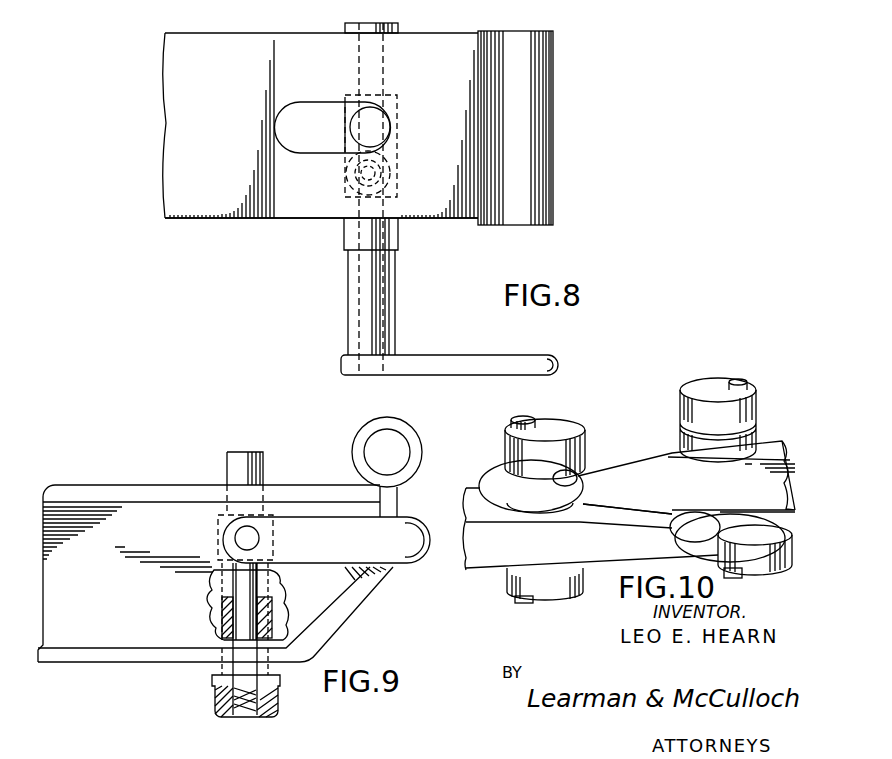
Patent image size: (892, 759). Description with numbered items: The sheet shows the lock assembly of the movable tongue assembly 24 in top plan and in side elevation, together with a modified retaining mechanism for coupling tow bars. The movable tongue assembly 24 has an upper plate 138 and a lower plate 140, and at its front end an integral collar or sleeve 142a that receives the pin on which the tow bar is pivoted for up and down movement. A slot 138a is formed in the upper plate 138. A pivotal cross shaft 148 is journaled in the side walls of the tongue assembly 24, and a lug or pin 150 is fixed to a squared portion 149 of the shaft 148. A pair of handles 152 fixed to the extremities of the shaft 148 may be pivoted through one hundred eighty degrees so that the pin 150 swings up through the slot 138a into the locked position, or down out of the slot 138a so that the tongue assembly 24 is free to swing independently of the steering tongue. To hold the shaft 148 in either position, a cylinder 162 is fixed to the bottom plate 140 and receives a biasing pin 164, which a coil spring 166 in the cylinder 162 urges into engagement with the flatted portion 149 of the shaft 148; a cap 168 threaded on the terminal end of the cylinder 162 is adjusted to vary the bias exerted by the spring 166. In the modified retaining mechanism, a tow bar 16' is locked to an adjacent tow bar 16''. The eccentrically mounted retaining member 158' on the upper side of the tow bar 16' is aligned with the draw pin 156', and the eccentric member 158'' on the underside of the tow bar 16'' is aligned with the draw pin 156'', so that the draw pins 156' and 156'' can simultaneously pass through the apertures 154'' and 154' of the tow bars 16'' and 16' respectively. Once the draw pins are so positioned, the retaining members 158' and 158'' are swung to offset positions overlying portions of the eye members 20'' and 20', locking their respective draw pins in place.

In FIG. 8, the upper plate member 138 is at (231, 101).
In FIG. 8, the slot 138a is at (307, 107).
In FIG. 8, the squared portion 149 is at (397, 97).
In FIG. 9, the squared portion 149 is at (218, 531).
In FIG. 8, the lug or pin 150 is at (388, 127).
In FIG. 9, the lug or pin 150 is at (227, 470).
In FIG. 8, the cylinder 162 is at (392, 178).
In FIG. 9, the cylinder 162 is at (218, 622).
In FIG. 8, the biasing pin 164 is at (360, 173).
In FIG. 9, the biasing pin 164 is at (240, 585).
In FIG. 8, the collar or sleeve 142a is at (547, 85).
In FIG. 9, the collar or sleeve 142a is at (352, 466).
In FIG. 8, the movable tongue assembly 24 is at (255, 228).
In FIG. 8, the pivotal cross shaft 148 is at (386, 317).
In FIG. 9, the pivotal cross shaft 148 is at (243, 545).
In FIG. 8, the handles 152 is at (455, 362).
In FIG. 9, the handles 152 is at (318, 552).
In FIG. 9, the lower plate member 140 is at (110, 657).
In FIG. 9, the coil spring 166 is at (243, 720).
In FIG. 9, the cap 168 is at (217, 705).
In FIG. 10, the eccentrically mounted retaining member 158' is at (570, 509).
In FIG. 10, the eye member 20'' is at (531, 486).
In FIG. 10, the adjacent tow bar 16'' is at (686, 456).
In FIG. 10, the aperture 154'' is at (669, 446).
In FIG. 10, the draw pin 156'' is at (757, 476).
In FIG. 10, the draw pin 156' is at (521, 529).
In FIG. 10, the tow bar 16' is at (591, 578).
In FIG. 10, the aperture 154' is at (650, 531).
In FIG. 10, the eye member 20' is at (730, 538).
In FIG. 10, the eccentric member 158'' is at (764, 564).